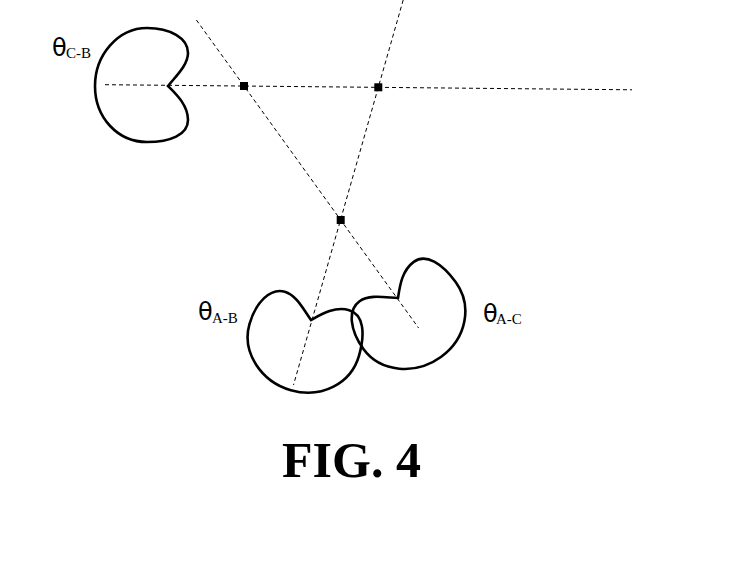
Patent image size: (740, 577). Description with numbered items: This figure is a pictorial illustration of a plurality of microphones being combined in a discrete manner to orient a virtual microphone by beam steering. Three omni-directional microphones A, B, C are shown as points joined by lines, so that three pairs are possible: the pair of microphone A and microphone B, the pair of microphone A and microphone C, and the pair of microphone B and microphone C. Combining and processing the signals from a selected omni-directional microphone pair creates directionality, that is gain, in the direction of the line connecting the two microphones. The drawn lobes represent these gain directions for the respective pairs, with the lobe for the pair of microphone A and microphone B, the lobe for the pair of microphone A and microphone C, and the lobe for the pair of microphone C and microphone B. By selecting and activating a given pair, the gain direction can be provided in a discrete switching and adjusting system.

The microphone A is at (357, 221).
The microphone B is at (393, 91).
The microphone C is at (260, 89).